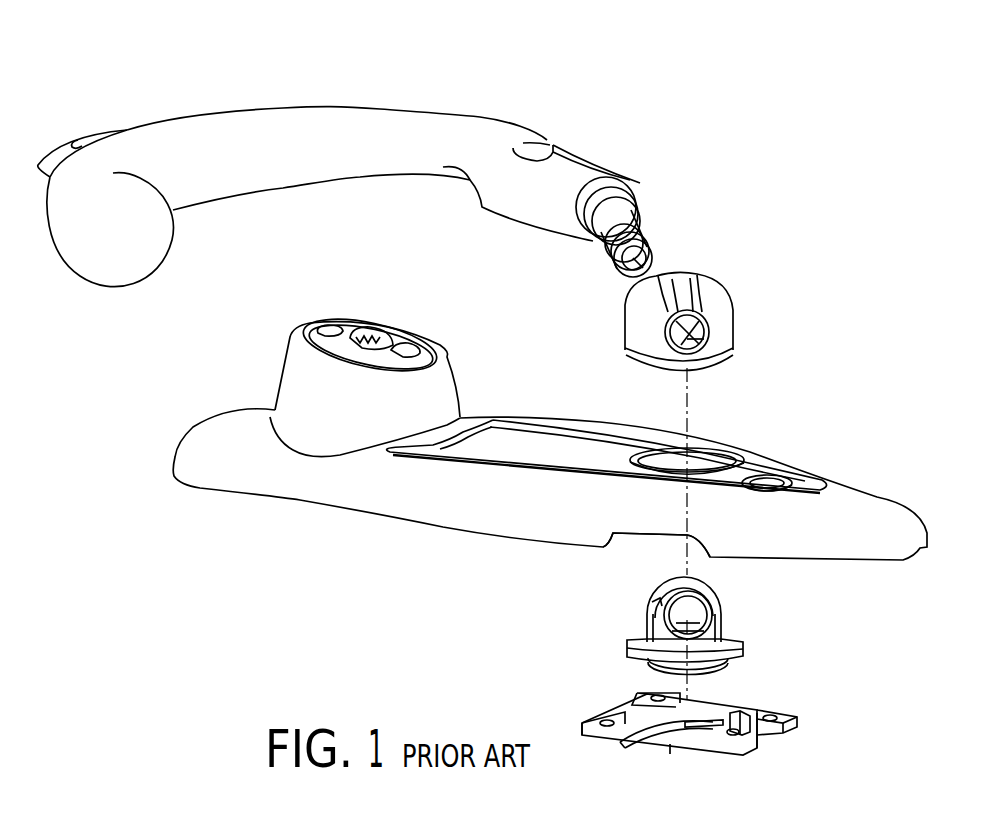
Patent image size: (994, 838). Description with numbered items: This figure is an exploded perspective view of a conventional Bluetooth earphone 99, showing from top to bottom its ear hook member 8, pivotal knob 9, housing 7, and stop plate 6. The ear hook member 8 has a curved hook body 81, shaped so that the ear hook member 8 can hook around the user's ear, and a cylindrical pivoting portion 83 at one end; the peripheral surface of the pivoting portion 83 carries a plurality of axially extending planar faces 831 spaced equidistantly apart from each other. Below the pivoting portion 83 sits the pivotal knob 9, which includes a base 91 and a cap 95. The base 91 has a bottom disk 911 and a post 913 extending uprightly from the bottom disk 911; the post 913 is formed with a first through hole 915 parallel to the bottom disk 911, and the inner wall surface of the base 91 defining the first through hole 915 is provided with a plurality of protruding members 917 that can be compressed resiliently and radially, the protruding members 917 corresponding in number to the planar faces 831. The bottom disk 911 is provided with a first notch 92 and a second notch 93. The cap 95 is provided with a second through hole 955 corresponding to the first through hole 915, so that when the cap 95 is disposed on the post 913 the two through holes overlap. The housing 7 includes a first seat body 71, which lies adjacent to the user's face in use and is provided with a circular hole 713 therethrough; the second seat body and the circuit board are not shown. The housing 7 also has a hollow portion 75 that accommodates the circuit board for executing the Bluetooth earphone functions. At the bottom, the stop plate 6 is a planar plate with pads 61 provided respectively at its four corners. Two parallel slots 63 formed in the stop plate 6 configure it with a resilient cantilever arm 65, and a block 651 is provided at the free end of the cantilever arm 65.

The earphone 99 is at (104, 84).
The ear hook member 8 is at (385, 92).
The hook body 81 is at (325, 135).
The pivoting portion 83 is at (650, 220).
The planar faces 831 is at (593, 242).
The pivotal knob 9 is at (737, 285).
The cap 95 is at (733, 315).
The second through hole 955 is at (720, 352).
The housing 7 is at (162, 432).
The first seat body 71 is at (575, 425).
The circular hole 713 is at (702, 463).
The hollow portion 75 is at (632, 553).
The base 91 is at (757, 608).
The post 913 is at (697, 580).
The first through hole 915 is at (680, 612).
The protruding members 917 is at (712, 606).
The first notch 92 is at (643, 653).
The second notch 93 is at (730, 660).
The bottom disk 911 is at (665, 668).
The stop plate 6 is at (702, 753).
The pads 61 is at (762, 716).
The slots 63 is at (713, 722).
The cantilever arm 65 is at (647, 728).
The block 651 is at (745, 722).